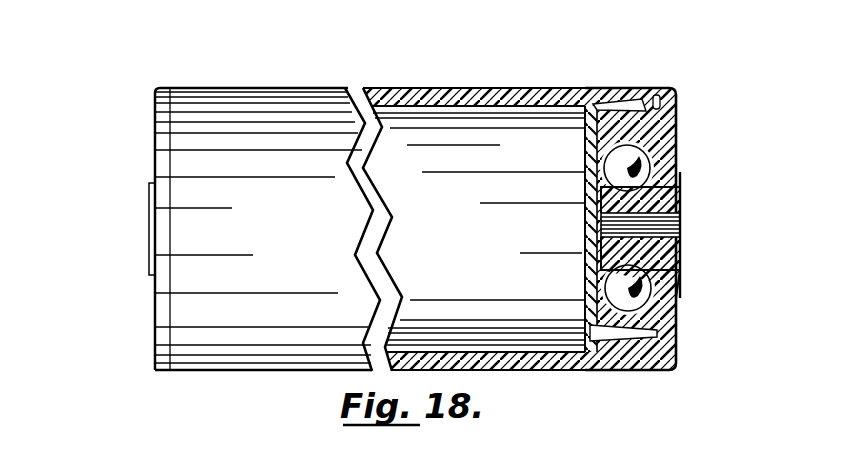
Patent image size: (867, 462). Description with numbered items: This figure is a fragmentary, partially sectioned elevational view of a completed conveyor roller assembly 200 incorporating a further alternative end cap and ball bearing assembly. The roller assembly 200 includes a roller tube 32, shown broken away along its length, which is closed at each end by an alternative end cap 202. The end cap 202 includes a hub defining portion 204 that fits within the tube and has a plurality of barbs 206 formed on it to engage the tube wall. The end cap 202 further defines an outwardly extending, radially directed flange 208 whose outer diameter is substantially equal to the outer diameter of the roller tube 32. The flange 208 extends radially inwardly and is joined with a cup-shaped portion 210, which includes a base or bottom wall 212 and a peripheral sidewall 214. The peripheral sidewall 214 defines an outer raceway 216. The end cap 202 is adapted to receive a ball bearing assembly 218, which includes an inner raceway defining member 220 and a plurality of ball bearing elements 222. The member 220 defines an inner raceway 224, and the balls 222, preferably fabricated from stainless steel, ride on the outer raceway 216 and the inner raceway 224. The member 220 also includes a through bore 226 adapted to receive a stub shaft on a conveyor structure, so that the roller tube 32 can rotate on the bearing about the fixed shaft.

The roller assembly 200 is at (297, 83).
The end cap 202 is at (148, 147).
The roller tube 32 is at (298, 221).
The hub defining portion 204 is at (578, 125).
The barbs 206 is at (646, 104).
The flange 208 is at (677, 114).
The cup-shaped portion 210 is at (578, 214).
The base or bottom wall 212 is at (585, 272).
The peripheral sidewall 214 is at (588, 330).
The outer raceway 216 is at (673, 294).
The ball bearing assembly 218 is at (661, 225).
The inner raceway defining member 220 is at (678, 200).
The ball bearing elements 222 is at (650, 150).
The inner raceway 224 is at (680, 258).
The through bore 226 is at (680, 225).